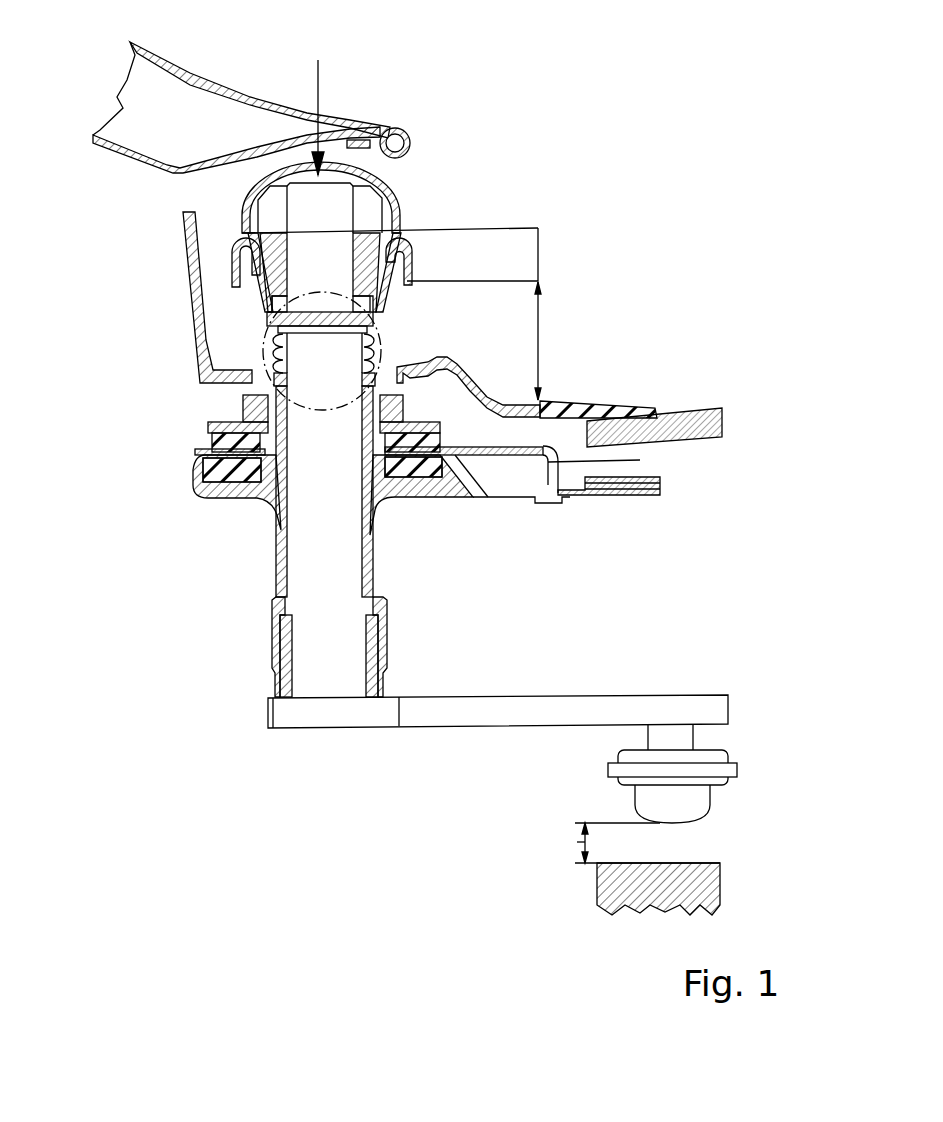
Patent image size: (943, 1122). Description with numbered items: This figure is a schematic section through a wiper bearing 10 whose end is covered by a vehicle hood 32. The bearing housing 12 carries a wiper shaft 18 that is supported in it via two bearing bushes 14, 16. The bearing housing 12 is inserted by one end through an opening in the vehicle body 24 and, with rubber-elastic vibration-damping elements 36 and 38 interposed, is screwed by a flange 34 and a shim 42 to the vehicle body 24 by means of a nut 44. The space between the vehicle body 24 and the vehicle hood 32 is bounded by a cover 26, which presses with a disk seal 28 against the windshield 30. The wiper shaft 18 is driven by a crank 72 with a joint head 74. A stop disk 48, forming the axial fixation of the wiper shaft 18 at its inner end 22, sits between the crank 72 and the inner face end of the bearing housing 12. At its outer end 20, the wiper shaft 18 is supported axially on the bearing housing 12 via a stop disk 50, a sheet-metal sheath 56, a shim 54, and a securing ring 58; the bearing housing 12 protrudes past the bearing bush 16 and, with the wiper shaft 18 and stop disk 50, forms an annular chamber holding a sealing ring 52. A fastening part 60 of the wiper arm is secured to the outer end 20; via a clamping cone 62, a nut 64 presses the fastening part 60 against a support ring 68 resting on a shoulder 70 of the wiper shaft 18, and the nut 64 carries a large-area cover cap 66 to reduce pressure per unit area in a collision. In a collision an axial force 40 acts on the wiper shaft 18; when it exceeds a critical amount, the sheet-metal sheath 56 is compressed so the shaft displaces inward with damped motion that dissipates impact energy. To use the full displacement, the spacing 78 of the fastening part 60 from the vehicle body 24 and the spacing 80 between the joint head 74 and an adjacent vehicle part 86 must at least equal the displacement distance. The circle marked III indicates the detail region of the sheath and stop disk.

The wiper bearing 10 is at (253, 560).
The bearing housing 12 is at (280, 628).
The bearing bush 14 is at (273, 678).
The bearing bush 16 is at (207, 452).
The wiper shaft 18 is at (345, 612).
The outer end 20 is at (308, 253).
The inner end 22 is at (320, 680).
The vehicle body 24 is at (559, 494).
The cover 26 is at (708, 373).
The disk seal 28 is at (625, 417).
The windshield 30 is at (640, 442).
The vehicle hood 32 is at (247, 95).
The flange 34 is at (277, 473).
The vibration-damping element 36 is at (450, 487).
The vibration-damping element 38 is at (660, 495).
The axial force 40 is at (320, 83).
The shim 42 is at (384, 420).
The nut 44 is at (403, 404).
The stop disk 48 is at (277, 684).
The stop disk 50 is at (377, 363).
The sealing ring 52 is at (271, 368).
The shim 54 is at (375, 317).
The sheet-metal sheath 56 is at (377, 335).
The securing ring 58 is at (382, 303).
The fastening part 60 is at (447, 246).
The clamping cone 62 is at (363, 255).
The nut 64 is at (342, 226).
The cover cap 66 is at (403, 130).
The support ring 68 is at (268, 320).
The shoulder 70 is at (272, 300).
The crank 72 is at (329, 821).
The joint head 74 is at (485, 853).
The spacing 78 is at (541, 312).
The spacing 80 is at (571, 823).
The adjacent vehicle part 86 is at (623, 875).
The detail III is at (263, 341).